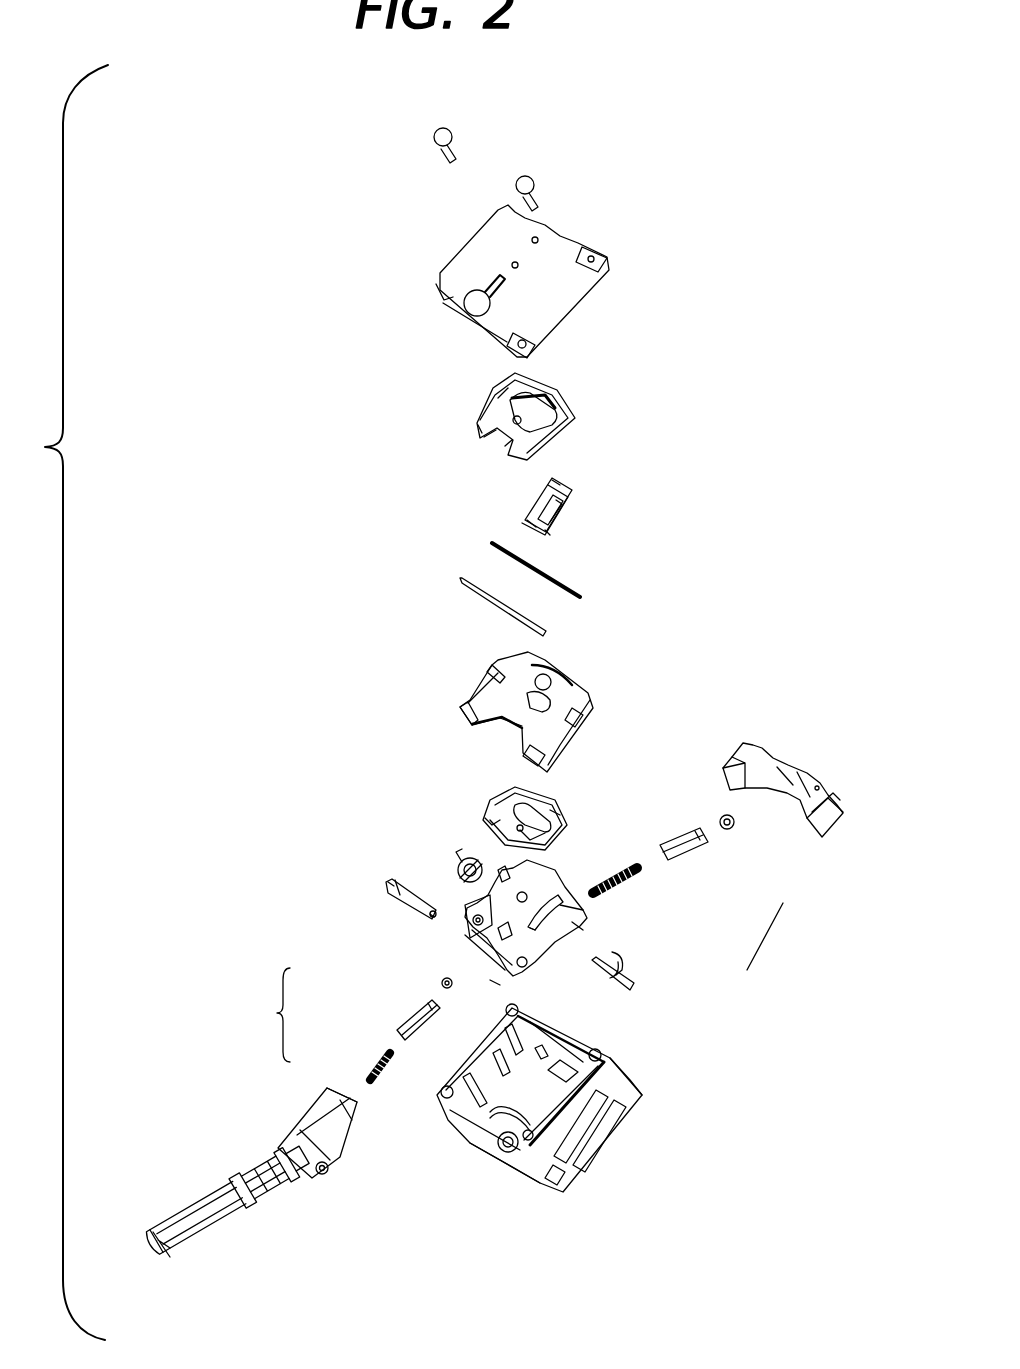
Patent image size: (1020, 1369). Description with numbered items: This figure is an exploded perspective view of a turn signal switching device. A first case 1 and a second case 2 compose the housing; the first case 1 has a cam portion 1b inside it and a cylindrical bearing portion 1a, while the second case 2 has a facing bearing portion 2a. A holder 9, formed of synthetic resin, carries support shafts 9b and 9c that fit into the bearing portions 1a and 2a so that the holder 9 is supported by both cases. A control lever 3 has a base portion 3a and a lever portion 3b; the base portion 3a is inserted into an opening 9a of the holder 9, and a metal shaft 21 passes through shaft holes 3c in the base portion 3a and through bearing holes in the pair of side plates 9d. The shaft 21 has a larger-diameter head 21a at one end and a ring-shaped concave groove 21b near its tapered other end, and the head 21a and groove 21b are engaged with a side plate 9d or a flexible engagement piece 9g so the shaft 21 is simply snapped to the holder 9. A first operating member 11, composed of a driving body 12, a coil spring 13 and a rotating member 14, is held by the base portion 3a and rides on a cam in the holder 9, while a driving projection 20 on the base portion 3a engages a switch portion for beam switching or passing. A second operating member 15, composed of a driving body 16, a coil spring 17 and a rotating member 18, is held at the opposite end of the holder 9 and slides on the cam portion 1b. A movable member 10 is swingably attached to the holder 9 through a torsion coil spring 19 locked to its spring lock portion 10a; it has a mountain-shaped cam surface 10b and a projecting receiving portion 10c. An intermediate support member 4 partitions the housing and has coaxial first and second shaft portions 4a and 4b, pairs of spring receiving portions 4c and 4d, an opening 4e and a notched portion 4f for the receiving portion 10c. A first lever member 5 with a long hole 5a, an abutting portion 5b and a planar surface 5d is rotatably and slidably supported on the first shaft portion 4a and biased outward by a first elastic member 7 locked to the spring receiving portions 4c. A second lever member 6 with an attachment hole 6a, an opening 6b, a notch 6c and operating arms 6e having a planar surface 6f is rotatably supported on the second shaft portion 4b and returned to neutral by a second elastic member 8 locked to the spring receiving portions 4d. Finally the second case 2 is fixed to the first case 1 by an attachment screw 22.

The first case 1 is at (612, 1078).
The bearing portion 1a is at (500, 1162).
The cam portion 1b is at (765, 780).
The second case 2 is at (570, 240).
The bearing portion 2a is at (477, 302).
The control lever 3 is at (247, 1170).
The base portion 3a is at (335, 1128).
The lever portion 3b is at (220, 1230).
The shaft hole 3c is at (328, 1176).
The intermediate support member 4 is at (598, 700).
The first shaft portion 4a is at (550, 678).
The second shaft portion 4b is at (472, 698).
The spring receiving portion 4c is at (493, 668).
The spring receiving portion 4d is at (458, 708).
The opening 4e is at (560, 700).
The notched portion 4f is at (490, 722).
The first lever member 5 is at (576, 494).
The long hole 5a is at (553, 521).
The abutting portion 5b is at (560, 482).
The planar surface 5d is at (532, 520).
The second lever member 6 is at (578, 410).
The attachment hole 6a is at (500, 400).
The opening 6b is at (558, 388).
The notch 6c is at (507, 446).
The operating arm 6e is at (478, 423).
The planar surface 6f is at (485, 437).
The first elastic member 7 is at (545, 580).
The second elastic member 8 is at (480, 600).
The holder 9 is at (550, 948).
The opening 9a is at (500, 958).
The support shaft 9b is at (493, 983).
The support shaft 9c is at (470, 907).
The side plate 9d is at (468, 938).
The flexible engagement piece 9g is at (540, 948).
The movable member 10 is at (570, 830).
The spring lock portion 10a is at (520, 795).
The cam surface 10b is at (560, 812).
The receiving portion 10c is at (490, 825).
The first operating member 11 is at (268, 1015).
The driving body 12 is at (400, 1018).
The coil spring 13 is at (380, 1070).
The rotating member 14 is at (440, 983).
The second operating member 15 is at (776, 936).
The driving body 16 is at (680, 850).
The coil spring 17 is at (630, 880).
The rotating member 18 is at (733, 829).
The torsion coil spring 19 is at (458, 860).
The driving projection 20 is at (640, 985).
The shaft 21 is at (423, 903).
The head 21a is at (386, 886).
The ring-shaped concave groove 21b is at (430, 917).
The attachment screw 22 is at (447, 152).